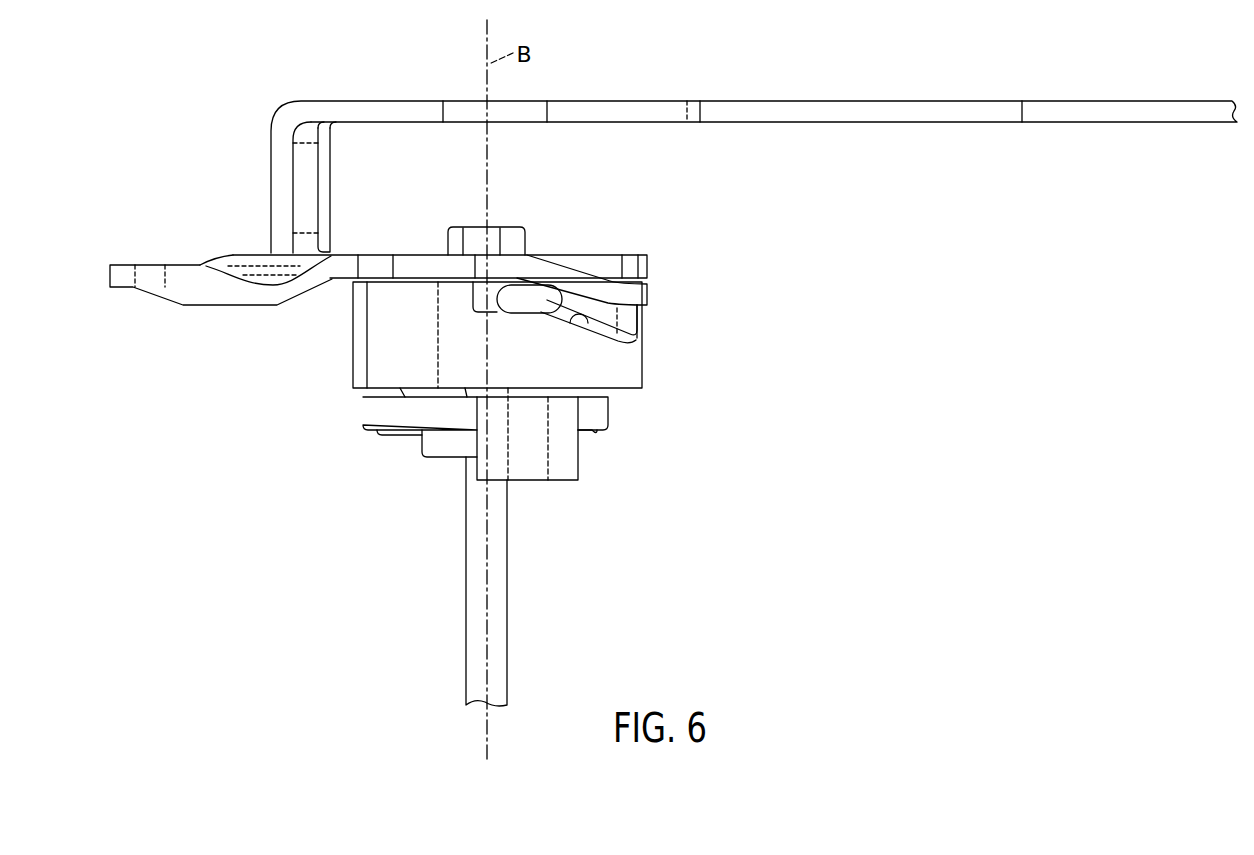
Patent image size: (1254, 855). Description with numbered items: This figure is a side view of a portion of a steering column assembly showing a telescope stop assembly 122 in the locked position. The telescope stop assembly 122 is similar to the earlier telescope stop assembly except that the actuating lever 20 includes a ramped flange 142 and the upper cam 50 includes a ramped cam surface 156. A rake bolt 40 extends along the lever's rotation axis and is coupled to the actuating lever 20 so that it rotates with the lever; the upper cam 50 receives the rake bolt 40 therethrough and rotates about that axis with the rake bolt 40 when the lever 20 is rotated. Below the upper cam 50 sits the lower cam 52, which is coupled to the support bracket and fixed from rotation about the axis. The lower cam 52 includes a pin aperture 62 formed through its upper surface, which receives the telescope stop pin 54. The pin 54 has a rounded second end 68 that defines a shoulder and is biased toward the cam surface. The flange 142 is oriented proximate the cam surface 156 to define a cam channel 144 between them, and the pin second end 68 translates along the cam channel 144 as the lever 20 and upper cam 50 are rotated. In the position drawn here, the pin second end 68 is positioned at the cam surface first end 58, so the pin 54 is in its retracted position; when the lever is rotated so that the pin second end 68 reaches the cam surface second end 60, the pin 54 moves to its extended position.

The telescope stop assembly 122 is at (162, 108).
The actuating lever 20 is at (402, 100).
The rake bolt 40 is at (513, 238).
The ramped flange 142 is at (577, 275).
The cam channel 144 is at (634, 315).
The upper cam 50 is at (350, 342).
The first end 58 is at (505, 318).
The second end 60 is at (630, 347).
The rounded second end 68 is at (636, 331).
The ramped cam surface 156 is at (590, 324).
The lower cam 52 is at (362, 412).
The telescope stop pin 54 is at (528, 392).
The pin aperture 62 is at (540, 467).